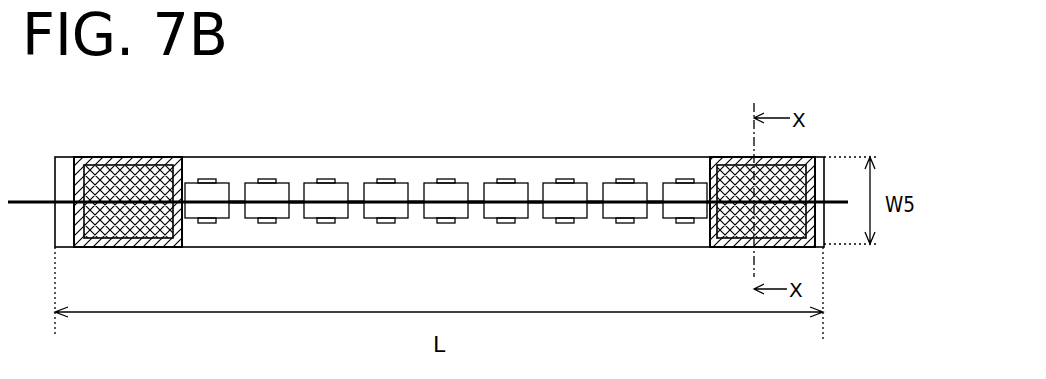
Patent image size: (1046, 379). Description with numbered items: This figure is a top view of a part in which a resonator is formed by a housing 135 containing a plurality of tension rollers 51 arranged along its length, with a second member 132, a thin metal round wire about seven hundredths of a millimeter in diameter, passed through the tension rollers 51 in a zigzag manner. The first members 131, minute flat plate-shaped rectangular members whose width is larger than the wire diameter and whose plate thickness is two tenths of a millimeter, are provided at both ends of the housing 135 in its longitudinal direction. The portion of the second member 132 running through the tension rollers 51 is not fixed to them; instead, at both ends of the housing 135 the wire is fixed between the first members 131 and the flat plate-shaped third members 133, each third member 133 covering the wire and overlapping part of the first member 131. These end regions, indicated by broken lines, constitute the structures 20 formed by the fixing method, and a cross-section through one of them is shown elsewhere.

The structure 20 is at (56, 247).
The tension roller 51 is at (397, 183).
The first member 131 is at (720, 247).
The second member 132 is at (295, 187).
The third member 133 is at (717, 166).
The housing 135 is at (235, 157).